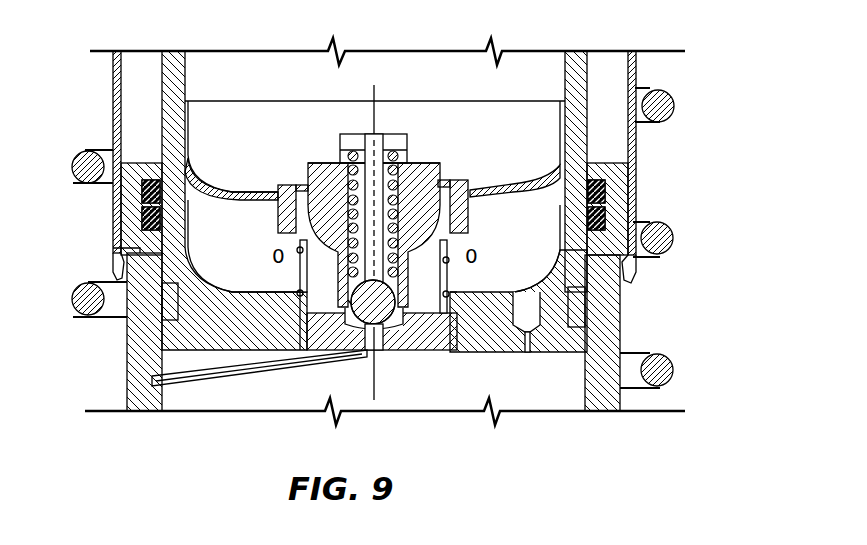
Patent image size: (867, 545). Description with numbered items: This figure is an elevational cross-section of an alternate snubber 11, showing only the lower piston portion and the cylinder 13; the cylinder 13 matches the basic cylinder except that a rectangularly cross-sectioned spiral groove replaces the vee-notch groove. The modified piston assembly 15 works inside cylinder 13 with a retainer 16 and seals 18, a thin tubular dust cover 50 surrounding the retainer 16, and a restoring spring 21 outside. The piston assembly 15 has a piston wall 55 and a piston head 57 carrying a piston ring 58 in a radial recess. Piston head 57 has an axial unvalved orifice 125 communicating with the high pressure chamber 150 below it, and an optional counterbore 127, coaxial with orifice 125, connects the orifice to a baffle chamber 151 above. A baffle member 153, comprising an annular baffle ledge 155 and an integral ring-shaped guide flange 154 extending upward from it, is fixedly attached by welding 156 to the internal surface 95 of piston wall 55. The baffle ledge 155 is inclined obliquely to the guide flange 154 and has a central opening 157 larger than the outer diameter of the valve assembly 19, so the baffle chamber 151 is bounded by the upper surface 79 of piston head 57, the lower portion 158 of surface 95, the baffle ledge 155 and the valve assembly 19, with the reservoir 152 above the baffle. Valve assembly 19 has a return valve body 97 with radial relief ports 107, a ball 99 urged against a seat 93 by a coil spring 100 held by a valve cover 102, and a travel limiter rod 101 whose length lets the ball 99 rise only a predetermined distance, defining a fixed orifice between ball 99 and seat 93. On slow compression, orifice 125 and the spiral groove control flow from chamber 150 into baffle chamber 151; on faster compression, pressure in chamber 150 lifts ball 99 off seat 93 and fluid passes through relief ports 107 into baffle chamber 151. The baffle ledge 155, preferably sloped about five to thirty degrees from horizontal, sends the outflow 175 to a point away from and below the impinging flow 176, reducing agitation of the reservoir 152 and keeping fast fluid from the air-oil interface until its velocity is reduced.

The alternate snubber 11 is at (576, 49).
The cylinder 13 is at (622, 341).
The modified piston assembly 15 is at (110, 105).
The retainer 16 is at (612, 171).
The seals 18 is at (600, 198).
The valve assembly 19 is at (437, 165).
The restoring spring 21 is at (675, 103).
The dust cover 50 is at (634, 137).
The piston wall 55 is at (173, 88).
The piston head 57 is at (180, 336).
The piston ring 58 is at (594, 308).
The upper surface of piston head 79 is at (222, 290).
The seat 93 is at (342, 315).
The internal surface of piston wall 95 is at (187, 62).
The return valve body 97 is at (343, 357).
The ball 99 is at (382, 324).
The spring 100 is at (397, 160).
The travel limiter rod 101 is at (440, 171).
The valve cover 102 is at (382, 135).
The radial relief ports 107 is at (348, 303).
The axial unvalved orifice 125 is at (515, 343).
The counterbore 127 is at (517, 297).
The high pressure chamber 150 is at (480, 399).
The baffle chamber 151 is at (502, 267).
The reservoir 152 is at (436, 86).
The baffle member 153 is at (200, 172).
The guide flange 154 is at (192, 118).
The baffle ledge 155 is at (215, 192).
The welding 156 is at (188, 101).
The central opening 157 is at (276, 190).
The lower portion of surface 158 is at (568, 213).
The outflow 175 is at (470, 190).
The impinging flow 176 is at (524, 290).